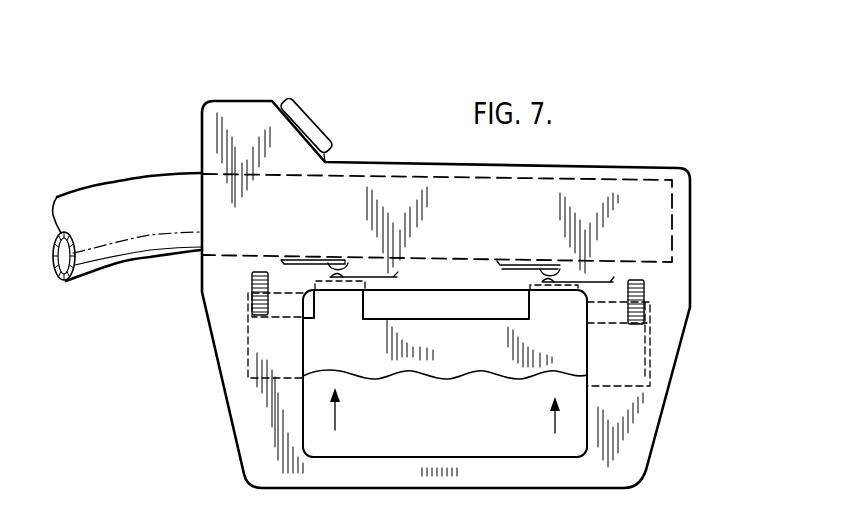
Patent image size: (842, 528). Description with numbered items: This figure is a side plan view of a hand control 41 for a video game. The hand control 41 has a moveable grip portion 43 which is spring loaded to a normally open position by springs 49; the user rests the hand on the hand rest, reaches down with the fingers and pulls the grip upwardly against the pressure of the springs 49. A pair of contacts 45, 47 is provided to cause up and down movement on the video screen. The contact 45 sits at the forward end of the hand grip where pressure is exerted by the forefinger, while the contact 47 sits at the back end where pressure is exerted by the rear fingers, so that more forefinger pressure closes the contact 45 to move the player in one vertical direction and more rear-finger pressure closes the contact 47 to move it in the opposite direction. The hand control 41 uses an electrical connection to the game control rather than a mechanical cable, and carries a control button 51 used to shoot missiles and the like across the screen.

The hand control 41 is at (662, 461).
The moveable grip portion 43 is at (458, 370).
The contact 45 is at (352, 262).
The contact 47 is at (560, 266).
The springs 49 is at (252, 288).
The control button 51 is at (315, 133).